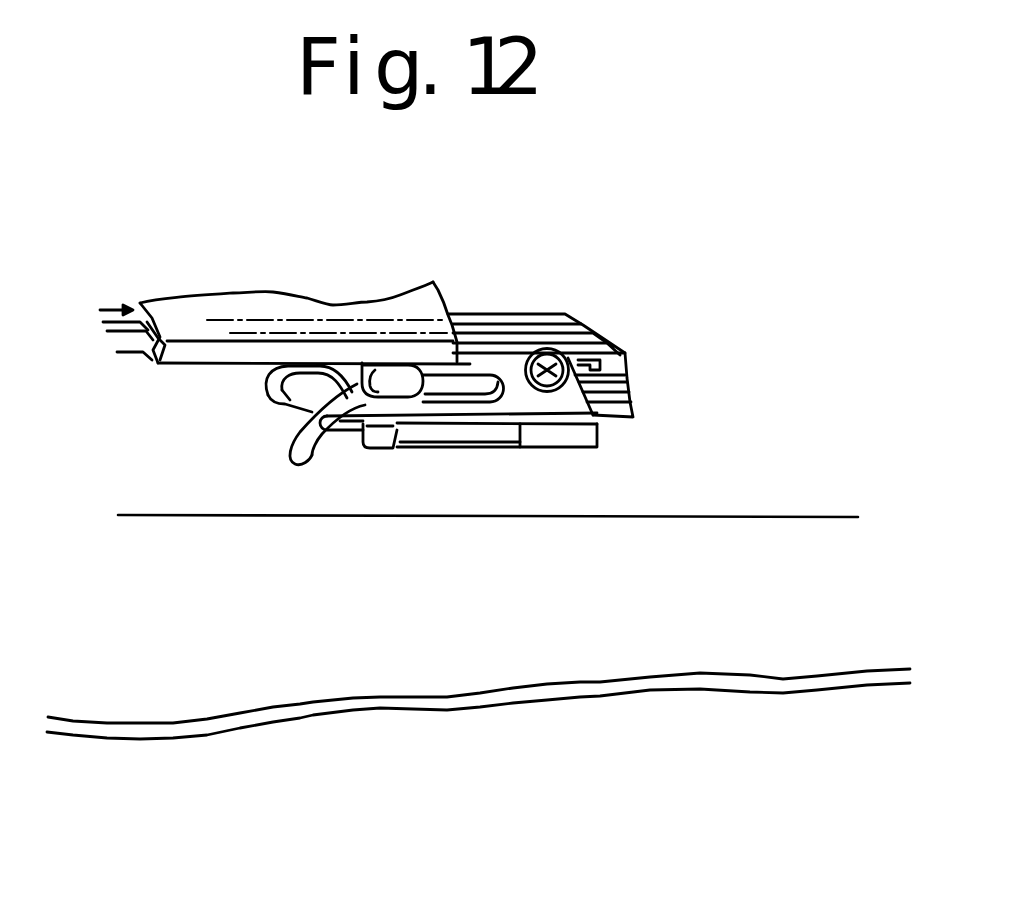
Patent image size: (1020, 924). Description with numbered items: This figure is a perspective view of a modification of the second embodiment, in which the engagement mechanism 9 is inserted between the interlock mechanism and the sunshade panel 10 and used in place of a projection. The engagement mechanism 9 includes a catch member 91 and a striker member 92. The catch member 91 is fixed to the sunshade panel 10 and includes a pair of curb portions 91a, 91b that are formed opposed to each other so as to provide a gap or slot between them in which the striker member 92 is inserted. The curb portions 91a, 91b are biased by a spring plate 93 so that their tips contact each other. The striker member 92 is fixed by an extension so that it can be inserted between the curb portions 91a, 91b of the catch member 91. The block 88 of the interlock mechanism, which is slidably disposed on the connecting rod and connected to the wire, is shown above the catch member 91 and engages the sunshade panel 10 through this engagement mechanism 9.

The block 88 is at (193, 343).
The engagement mechanism 9 is at (488, 589).
The catch member 91 is at (549, 410).
The curb portion 91a is at (270, 392).
The curb portion 91b is at (305, 425).
The striker member 92 is at (412, 385).
The spring plate 93 is at (607, 432).
The sunshade panel 10 is at (105, 697).